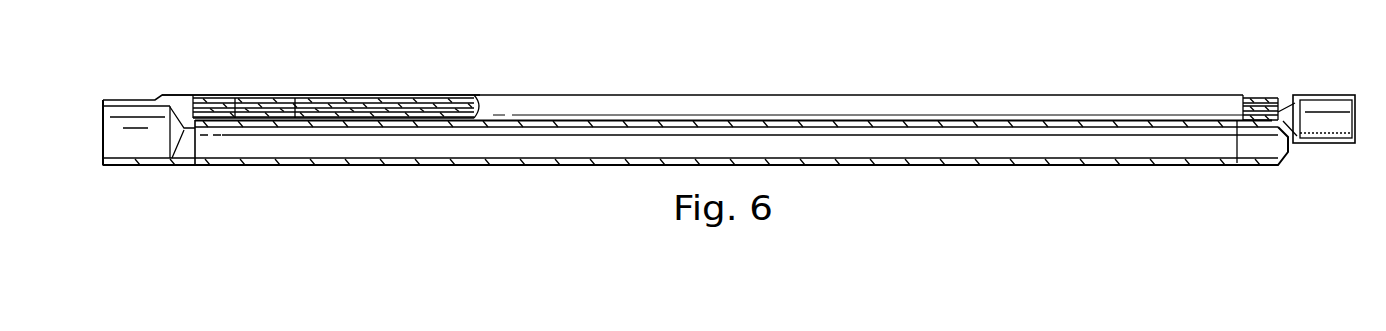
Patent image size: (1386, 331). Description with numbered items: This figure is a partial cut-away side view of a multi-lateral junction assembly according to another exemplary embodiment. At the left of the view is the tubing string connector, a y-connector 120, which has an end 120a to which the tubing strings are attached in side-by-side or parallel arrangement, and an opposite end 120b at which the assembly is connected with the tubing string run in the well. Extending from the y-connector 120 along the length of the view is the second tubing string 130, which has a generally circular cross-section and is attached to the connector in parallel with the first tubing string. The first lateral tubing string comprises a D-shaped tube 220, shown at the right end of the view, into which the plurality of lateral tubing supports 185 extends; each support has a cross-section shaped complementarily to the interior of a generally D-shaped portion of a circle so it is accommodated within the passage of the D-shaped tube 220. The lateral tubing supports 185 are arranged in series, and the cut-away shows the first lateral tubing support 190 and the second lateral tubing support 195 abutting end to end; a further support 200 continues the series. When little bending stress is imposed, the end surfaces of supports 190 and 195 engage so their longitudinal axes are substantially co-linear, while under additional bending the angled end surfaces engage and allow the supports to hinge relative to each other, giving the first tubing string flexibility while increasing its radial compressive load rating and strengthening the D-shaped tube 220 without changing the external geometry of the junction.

The y-connector 120 is at (130, 98).
The end of the connector 120a is at (243, 97).
The end of the connector 120b is at (96, 152).
The second tubing string 130 is at (333, 167).
The plurality of lateral tubing supports 185 is at (465, 77).
The first lateral tubing support 190 is at (415, 97).
The second lateral tubing support 195 is at (372, 97).
The third layer 200 is at (308, 97).
The D-shaped tube 220 is at (1188, 95).